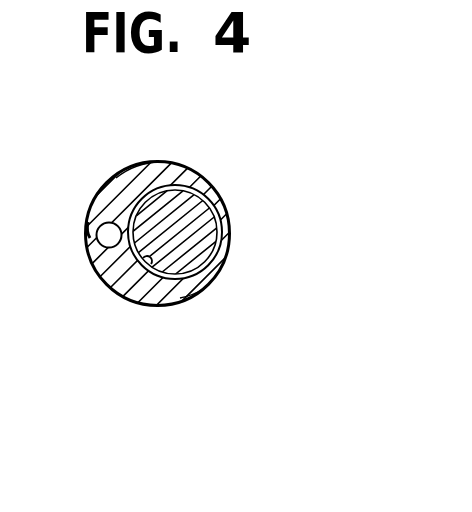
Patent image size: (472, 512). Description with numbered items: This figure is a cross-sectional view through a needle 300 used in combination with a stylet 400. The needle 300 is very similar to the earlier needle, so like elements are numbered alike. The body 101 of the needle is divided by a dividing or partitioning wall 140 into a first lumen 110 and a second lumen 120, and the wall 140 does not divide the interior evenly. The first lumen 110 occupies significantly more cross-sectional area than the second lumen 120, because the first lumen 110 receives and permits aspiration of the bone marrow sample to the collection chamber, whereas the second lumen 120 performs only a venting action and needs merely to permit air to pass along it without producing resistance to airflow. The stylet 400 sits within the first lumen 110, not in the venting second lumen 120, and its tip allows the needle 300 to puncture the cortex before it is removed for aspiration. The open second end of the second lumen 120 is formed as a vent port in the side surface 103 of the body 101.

The needle 300 is at (233, 252).
The stylet 400 is at (203, 203).
The side surface 103 is at (88, 243).
The second lumen 120 is at (97, 228).
The dividing wall 140 is at (127, 172).
The first lumen 110 is at (148, 262).
The body 101 is at (193, 293).